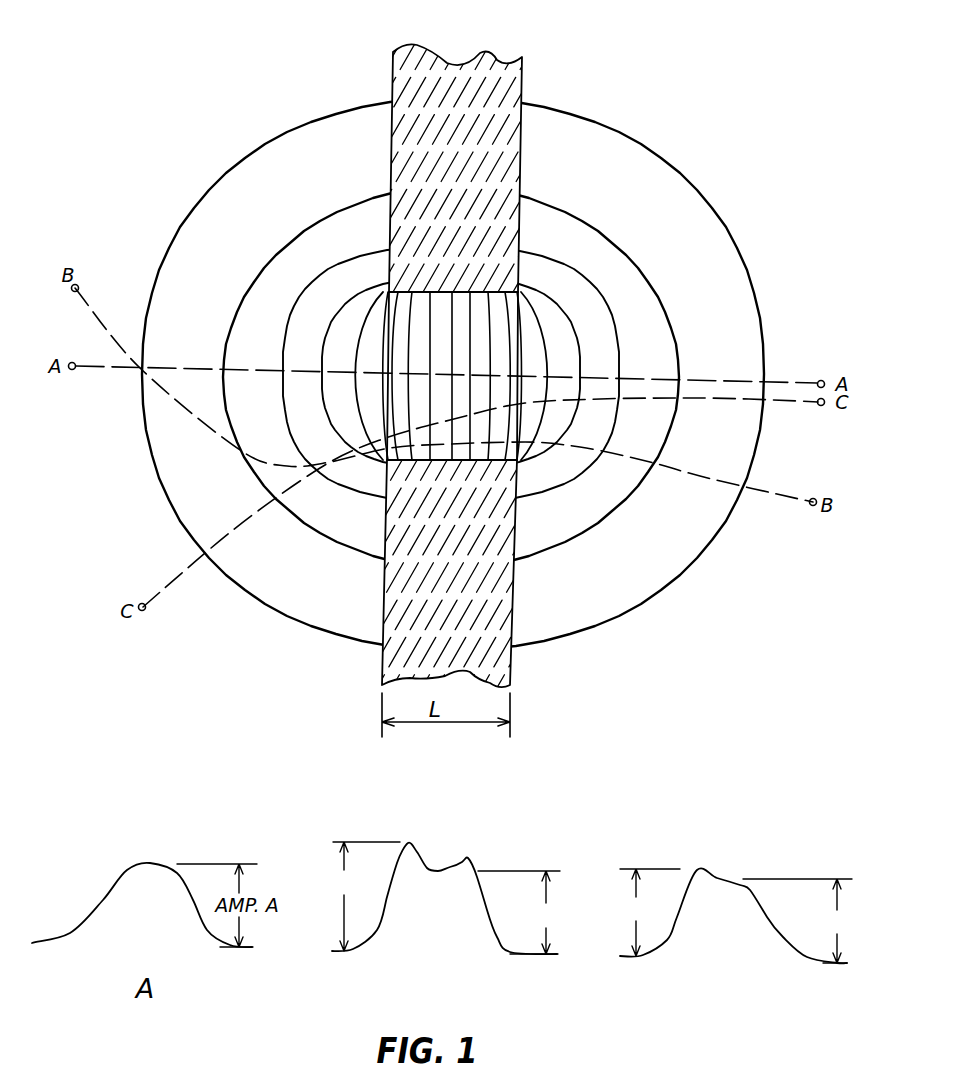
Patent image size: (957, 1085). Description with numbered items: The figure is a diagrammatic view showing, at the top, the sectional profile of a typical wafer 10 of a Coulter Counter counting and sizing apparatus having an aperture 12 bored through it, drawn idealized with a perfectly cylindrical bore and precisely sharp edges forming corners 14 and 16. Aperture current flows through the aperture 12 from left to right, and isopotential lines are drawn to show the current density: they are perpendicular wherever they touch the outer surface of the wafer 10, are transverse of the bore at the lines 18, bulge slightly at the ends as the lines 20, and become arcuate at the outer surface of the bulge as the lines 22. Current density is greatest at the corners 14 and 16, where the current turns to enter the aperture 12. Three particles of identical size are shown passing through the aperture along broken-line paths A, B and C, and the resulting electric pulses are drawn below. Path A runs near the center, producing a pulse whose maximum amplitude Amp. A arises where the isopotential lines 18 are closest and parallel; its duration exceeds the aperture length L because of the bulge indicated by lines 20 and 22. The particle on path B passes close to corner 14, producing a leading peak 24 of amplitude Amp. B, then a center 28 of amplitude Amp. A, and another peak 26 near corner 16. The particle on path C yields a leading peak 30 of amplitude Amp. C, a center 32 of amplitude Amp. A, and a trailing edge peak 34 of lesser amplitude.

The wafer 10 is at (453, 370).
The aperture 12 is at (433, 287).
The corner 14 is at (387, 458).
The corner 16 is at (507, 462).
The isopotential lines 18 is at (460, 331).
The isopotential lines 20 is at (357, 362).
The isopotential lines 22 is at (296, 315).
The peak 24 is at (447, 902).
The peak 26 is at (470, 860).
The center 28 is at (447, 914).
The peak 30 is at (736, 922).
The center 32 is at (736, 923).
The trailing edge peak 34 is at (750, 887).